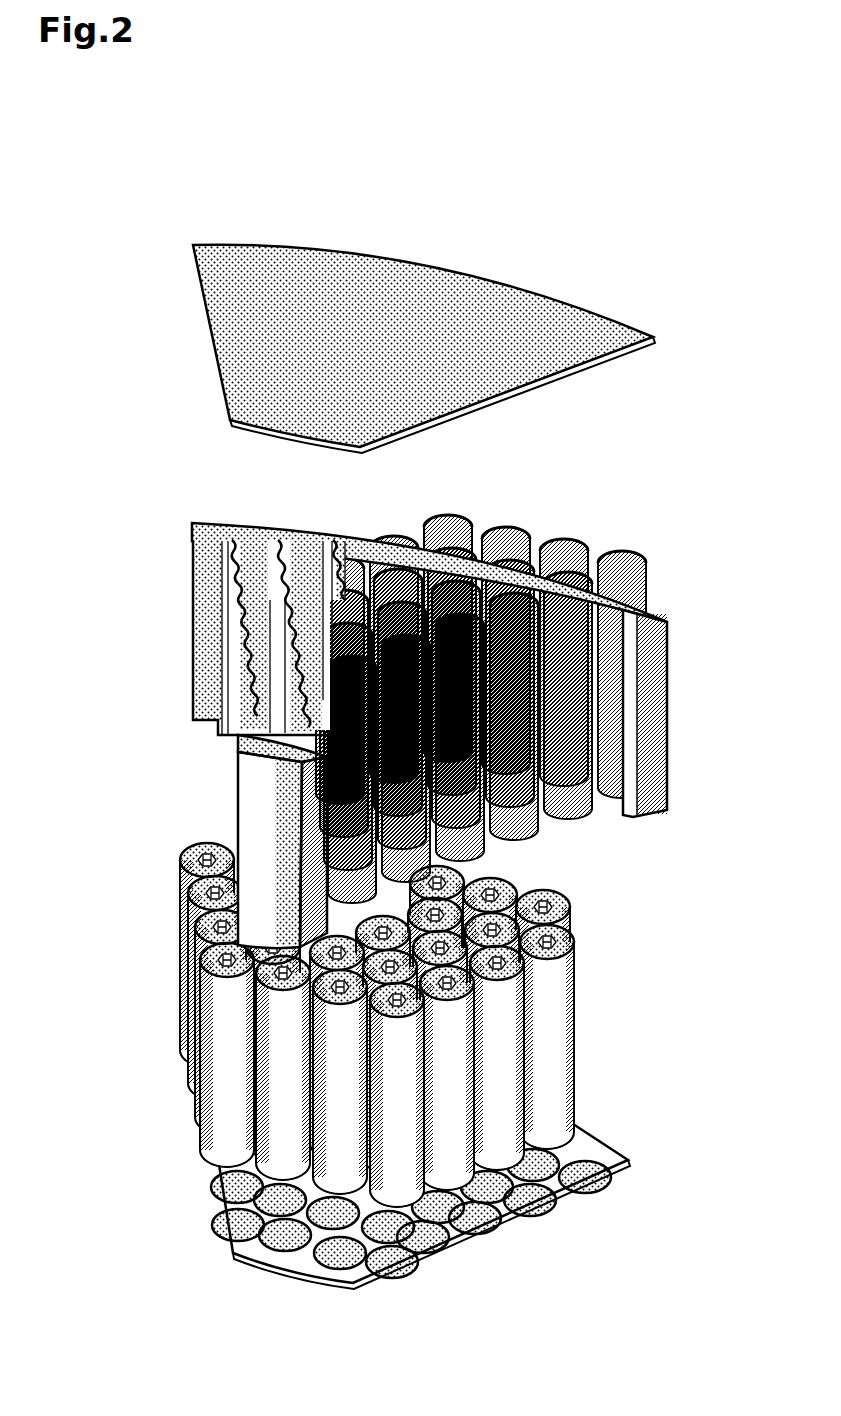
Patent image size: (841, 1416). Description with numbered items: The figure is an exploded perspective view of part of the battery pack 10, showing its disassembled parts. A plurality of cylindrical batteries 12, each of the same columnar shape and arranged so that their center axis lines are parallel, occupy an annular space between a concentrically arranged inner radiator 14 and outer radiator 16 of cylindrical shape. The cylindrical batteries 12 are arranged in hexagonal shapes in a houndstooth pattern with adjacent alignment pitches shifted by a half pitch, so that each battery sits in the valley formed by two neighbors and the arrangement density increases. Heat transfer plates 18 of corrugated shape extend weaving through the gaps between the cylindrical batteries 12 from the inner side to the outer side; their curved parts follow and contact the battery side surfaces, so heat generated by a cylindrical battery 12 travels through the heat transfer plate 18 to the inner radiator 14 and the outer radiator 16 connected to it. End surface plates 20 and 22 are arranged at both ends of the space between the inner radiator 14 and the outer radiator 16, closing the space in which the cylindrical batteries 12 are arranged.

The battery pack 10 is at (593, 209).
The cylindrical battery 12 is at (567, 903).
The inner radiator 14 is at (267, 787).
The outer radiator 16 is at (227, 528).
The heat transfer plate 18 is at (230, 592).
The end surface plate 20 is at (263, 283).
The end surface plate 22 is at (577, 1145).